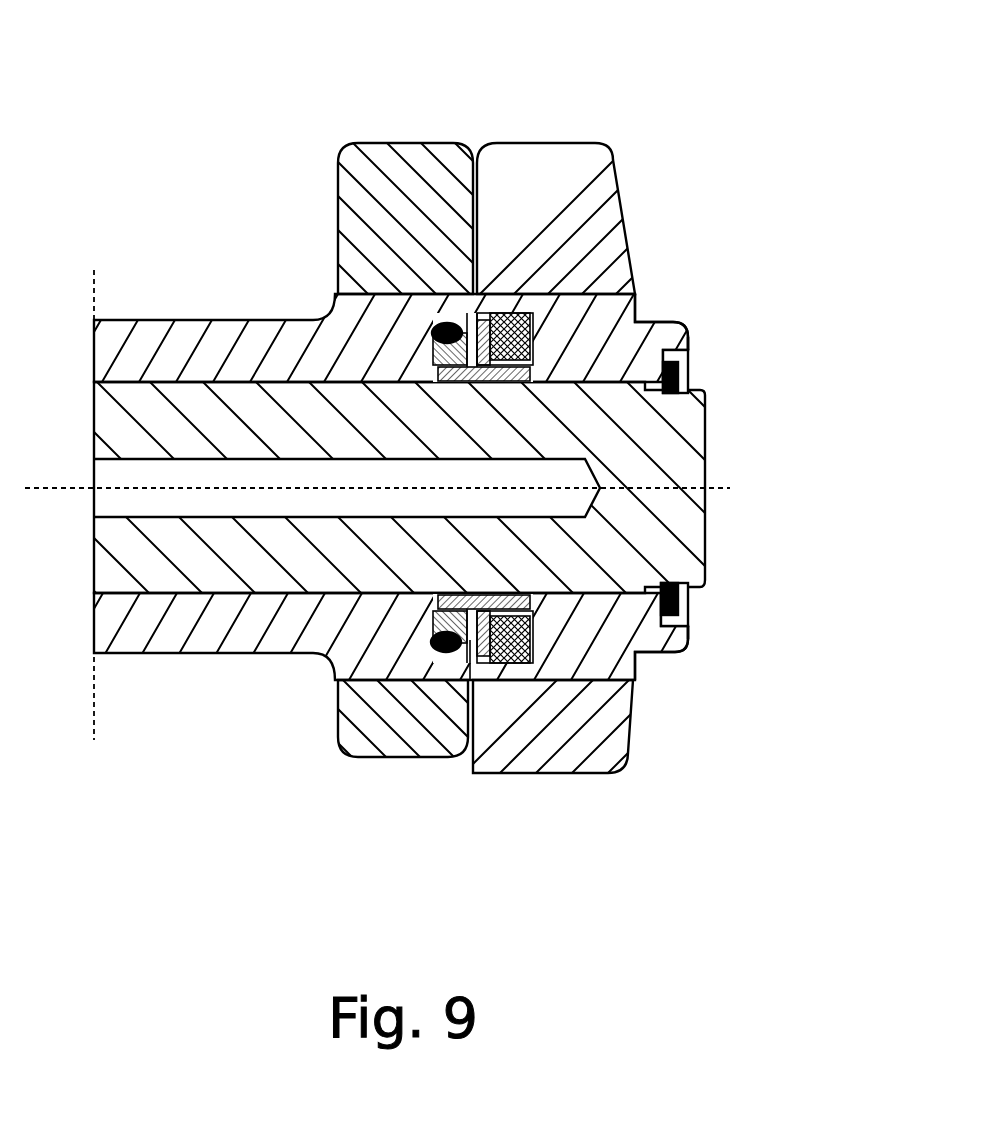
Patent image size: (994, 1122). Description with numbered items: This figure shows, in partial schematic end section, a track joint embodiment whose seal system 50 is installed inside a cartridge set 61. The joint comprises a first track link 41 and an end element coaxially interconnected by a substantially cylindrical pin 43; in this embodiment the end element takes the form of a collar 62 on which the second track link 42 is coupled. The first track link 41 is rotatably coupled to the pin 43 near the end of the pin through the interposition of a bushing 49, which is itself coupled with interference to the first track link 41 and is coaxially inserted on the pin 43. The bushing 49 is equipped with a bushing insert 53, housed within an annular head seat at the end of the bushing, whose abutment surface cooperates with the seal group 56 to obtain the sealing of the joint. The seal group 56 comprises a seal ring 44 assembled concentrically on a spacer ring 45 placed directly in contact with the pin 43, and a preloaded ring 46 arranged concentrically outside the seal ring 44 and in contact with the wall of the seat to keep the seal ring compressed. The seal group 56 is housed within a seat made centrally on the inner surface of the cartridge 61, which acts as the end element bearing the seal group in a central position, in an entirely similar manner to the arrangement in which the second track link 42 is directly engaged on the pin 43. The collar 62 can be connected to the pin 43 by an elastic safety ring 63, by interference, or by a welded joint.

The first track link 41 is at (390, 735).
The second track link 42 is at (539, 748).
The pin 43 is at (281, 551).
The seal ring 44 is at (535, 350).
The spacer ring 45 is at (535, 376).
The preloaded ring 46 is at (535, 324).
The bushing 49 is at (177, 630).
The seal system 50 is at (476, 321).
The bushing insert 53 is at (428, 336).
The seal group 56 is at (533, 298).
The cartridge set 61 is at (738, 602).
The collar 62 is at (613, 638).
The elastic safety ring 63 is at (683, 620).